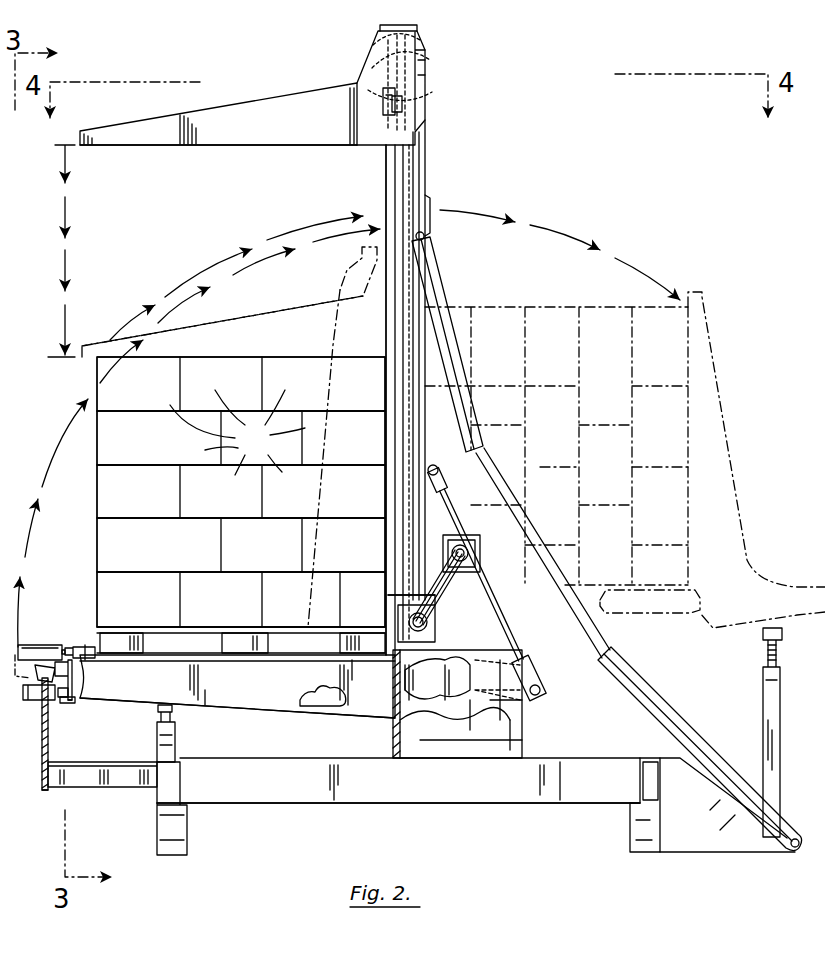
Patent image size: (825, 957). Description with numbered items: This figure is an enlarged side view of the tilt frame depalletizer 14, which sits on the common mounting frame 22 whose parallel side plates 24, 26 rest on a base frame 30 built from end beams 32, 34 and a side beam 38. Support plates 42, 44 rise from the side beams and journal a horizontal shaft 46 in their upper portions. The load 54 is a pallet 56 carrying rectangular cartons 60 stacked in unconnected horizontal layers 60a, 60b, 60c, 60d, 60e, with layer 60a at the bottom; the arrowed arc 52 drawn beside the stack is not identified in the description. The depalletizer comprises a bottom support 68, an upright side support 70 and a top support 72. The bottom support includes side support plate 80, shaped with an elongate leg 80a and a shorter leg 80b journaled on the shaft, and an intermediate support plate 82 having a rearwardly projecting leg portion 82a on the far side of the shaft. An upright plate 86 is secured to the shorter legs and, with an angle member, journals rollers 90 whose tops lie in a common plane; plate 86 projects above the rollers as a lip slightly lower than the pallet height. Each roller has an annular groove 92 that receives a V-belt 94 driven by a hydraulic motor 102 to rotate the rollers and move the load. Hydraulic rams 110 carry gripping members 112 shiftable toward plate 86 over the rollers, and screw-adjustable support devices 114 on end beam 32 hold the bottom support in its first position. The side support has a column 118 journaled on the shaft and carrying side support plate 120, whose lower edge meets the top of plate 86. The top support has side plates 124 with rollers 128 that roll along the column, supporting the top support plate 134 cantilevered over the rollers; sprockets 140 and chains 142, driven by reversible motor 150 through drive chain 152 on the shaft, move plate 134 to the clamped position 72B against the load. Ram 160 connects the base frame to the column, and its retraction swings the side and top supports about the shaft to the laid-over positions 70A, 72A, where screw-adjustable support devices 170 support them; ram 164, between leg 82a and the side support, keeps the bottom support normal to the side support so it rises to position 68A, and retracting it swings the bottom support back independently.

The tilt frame depalletizer 14 is at (515, 184).
The mounting frame 22 is at (125, 804).
The side plate 24 is at (49, 741).
The side plate 26 is at (392, 725).
The base frame 30 is at (328, 818).
The end beam 32 is at (182, 782).
The end beam 34 is at (638, 782).
The side beam 38 is at (503, 793).
The support plate 42 is at (440, 737).
The support plate 44 is at (513, 735).
The shaft 46 is at (432, 625).
The swing path of stack 52 is at (190, 438).
The load 54 is at (52, 376).
The pallet 56 is at (207, 626).
The cartons 60 is at (241, 492).
The bottom layer 60a is at (98, 600).
The layer 60b is at (98, 548).
The layer 60c is at (98, 493).
The layer 60d is at (98, 440).
The layer 60e is at (98, 384).
The bottom support 68 is at (228, 712).
The bottom support laid-over position 68A is at (333, 338).
The side support 70 is at (347, 193).
The side support laid-over position 70A is at (655, 613).
The top support 72 is at (265, 86).
The top support laid-over position 72A is at (728, 445).
The top support clamped position 72B is at (287, 306).
The side support plate 80 is at (265, 693).
The elongate leg 80a is at (275, 705).
The shorter leg 80b is at (398, 597).
The intermediate support plate 82 is at (325, 705).
The rearwardly projecting leg portion 82a is at (540, 703).
The upright plate 86 is at (385, 640).
The rollers 90 is at (78, 668).
The annular groove 92 is at (68, 645).
The V-belt 94 is at (70, 705).
The hydraulic motor 102 is at (32, 702).
The hydraulic rams 110 is at (50, 650).
The gripping member 112 is at (88, 645).
The screw-adjustable support devices 114 is at (158, 747).
The column 118 is at (398, 167).
The side support plate 120 is at (380, 190).
The side plates 124 is at (416, 64).
The rollers 128 is at (380, 75).
The top support plate 134 is at (245, 148).
The sprockets 140 is at (410, 93).
The chains 142 is at (423, 138).
The reversible motor 150 is at (470, 547).
The drive chain 152 is at (455, 590).
The ram 160 is at (655, 694).
The ram 164 is at (437, 298).
The screw-adjustable support devices 170 is at (770, 732).